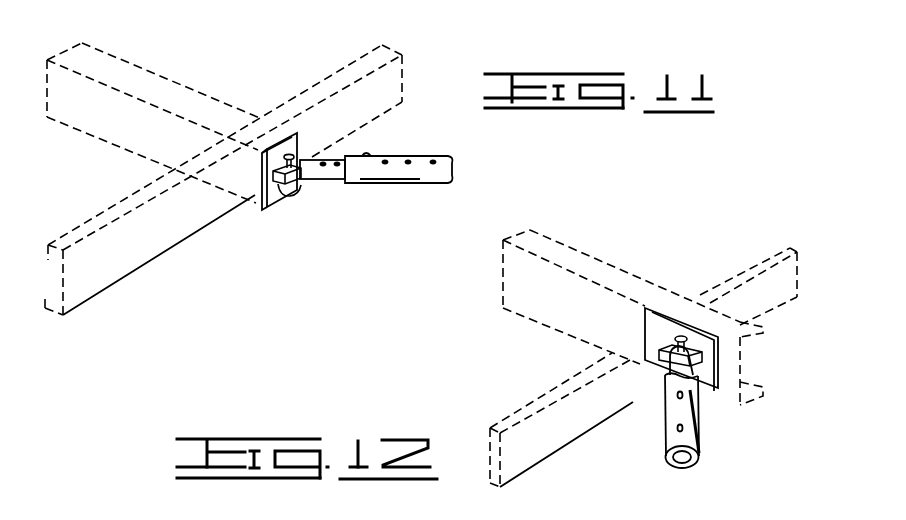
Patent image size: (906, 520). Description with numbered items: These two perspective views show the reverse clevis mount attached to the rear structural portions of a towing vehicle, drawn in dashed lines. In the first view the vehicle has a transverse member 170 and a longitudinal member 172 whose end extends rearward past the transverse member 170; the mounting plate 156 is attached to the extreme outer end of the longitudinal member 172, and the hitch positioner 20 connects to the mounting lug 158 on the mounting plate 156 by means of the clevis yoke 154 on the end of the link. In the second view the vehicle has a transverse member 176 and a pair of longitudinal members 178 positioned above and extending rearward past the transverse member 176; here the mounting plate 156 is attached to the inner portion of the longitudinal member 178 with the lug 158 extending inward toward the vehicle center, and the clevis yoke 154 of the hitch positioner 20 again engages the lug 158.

In FIG. 11, the hitch positioner 20 is at (396, 200).
In FIG. 12, the hitch positioner 20 is at (713, 449).
In FIG. 11, the clevis yoke 154 is at (320, 186).
In FIG. 12, the clevis yoke 154 is at (683, 365).
In FIG. 11, the mounting plate 156 is at (271, 212).
In FIG. 12, the mounting plate 156 is at (646, 320).
In FIG. 11, the mounting lug 158 is at (292, 190).
In FIG. 12, the mounting lug 158 is at (662, 362).
In FIG. 11, the transverse member 170 is at (308, 99).
In FIG. 11, the longitudinal member 172 is at (134, 72).
In FIG. 12, the transverse member 176 is at (513, 412).
In FIG. 12, the longitudinal member 178 is at (592, 266).